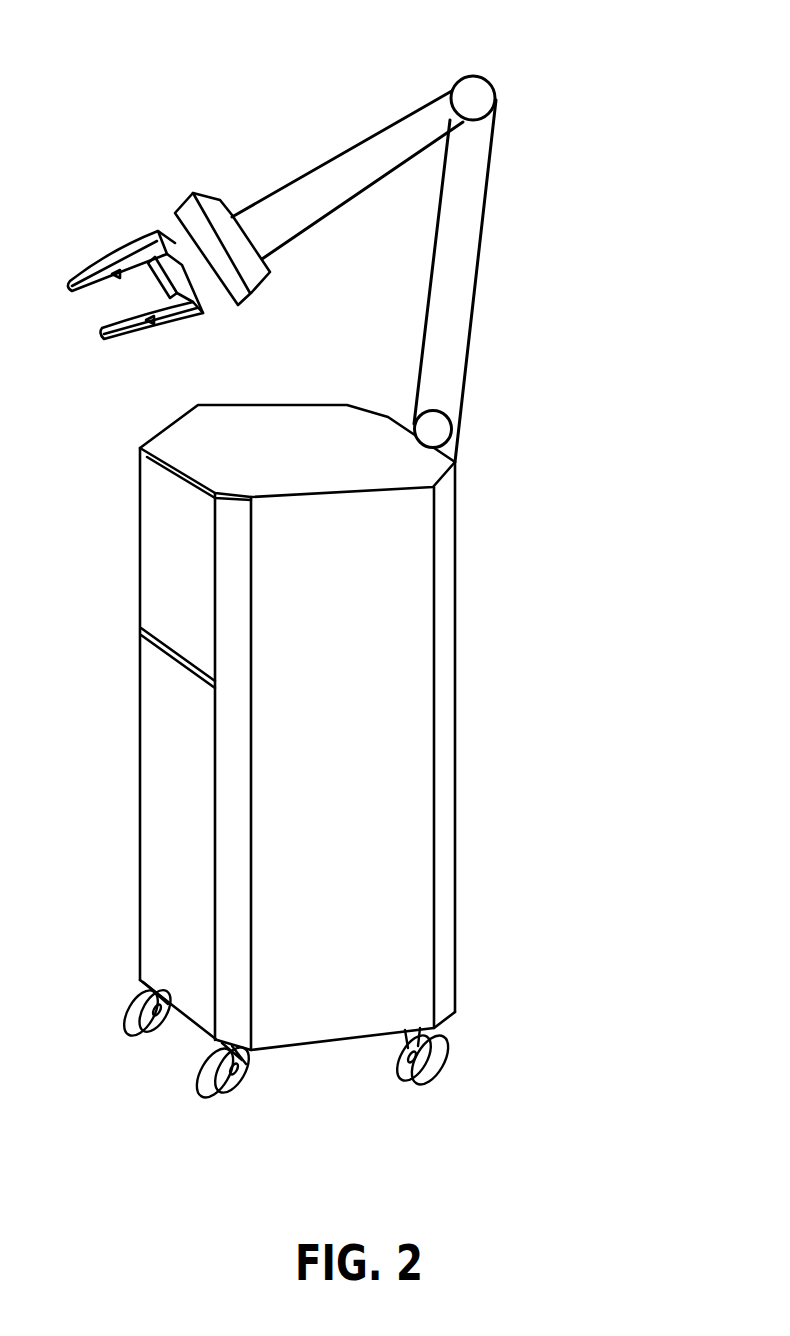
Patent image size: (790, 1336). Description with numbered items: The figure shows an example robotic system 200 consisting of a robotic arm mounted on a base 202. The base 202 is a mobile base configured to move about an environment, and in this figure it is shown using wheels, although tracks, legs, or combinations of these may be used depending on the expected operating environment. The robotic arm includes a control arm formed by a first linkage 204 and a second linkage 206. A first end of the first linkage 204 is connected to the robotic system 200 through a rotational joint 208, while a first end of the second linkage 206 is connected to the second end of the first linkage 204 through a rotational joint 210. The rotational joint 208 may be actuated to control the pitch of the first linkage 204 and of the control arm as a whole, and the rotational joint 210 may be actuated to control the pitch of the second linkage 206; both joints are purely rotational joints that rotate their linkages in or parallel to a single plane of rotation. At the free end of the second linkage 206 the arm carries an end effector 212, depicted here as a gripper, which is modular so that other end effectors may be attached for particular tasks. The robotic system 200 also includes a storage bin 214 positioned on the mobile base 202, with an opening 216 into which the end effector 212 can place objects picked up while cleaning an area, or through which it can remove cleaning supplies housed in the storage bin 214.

The robotic system 200 is at (342, 551).
The base 202 is at (262, 737).
The first linkage 204 is at (483, 278).
The second linkage 206 is at (383, 102).
The rotational joint 208 is at (483, 448).
The rotational joint 210 is at (496, 72).
The end effector 212 is at (95, 237).
The storage bin 214 is at (305, 431).
The opening 216 is at (167, 545).